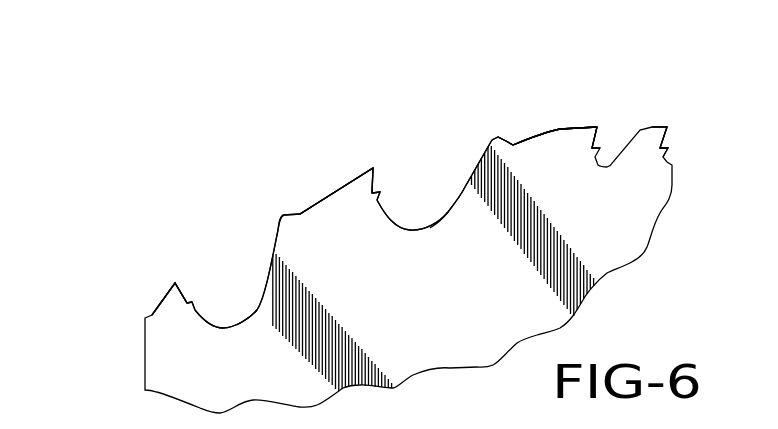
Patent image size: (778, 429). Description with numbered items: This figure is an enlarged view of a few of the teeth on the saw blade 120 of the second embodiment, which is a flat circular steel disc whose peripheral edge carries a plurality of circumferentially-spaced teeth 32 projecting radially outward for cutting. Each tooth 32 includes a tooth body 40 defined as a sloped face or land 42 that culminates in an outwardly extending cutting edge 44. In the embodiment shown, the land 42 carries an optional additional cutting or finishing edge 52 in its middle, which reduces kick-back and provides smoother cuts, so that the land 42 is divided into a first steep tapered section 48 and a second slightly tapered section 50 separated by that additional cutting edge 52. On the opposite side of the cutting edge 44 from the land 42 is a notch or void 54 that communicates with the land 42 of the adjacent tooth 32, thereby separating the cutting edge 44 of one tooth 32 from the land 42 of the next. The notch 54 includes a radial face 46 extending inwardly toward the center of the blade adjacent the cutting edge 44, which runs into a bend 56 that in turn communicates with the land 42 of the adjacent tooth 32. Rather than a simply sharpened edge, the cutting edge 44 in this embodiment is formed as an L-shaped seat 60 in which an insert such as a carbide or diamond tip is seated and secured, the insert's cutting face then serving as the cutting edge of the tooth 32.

The saw blade 120 is at (281, 101).
The tooth 32 is at (133, 312).
The tooth body 40 is at (314, 199).
The land 42 is at (554, 137).
The cutting edge 44 is at (175, 284).
The radial face 46 is at (195, 310).
The first steep tapered section 48 is at (270, 265).
The second slightly tapered section 50 is at (335, 190).
The additional cutting edge 52 is at (280, 217).
The notch 54 is at (247, 326).
The bend 56 is at (207, 333).
The L-shaped seat 60 is at (186, 302).